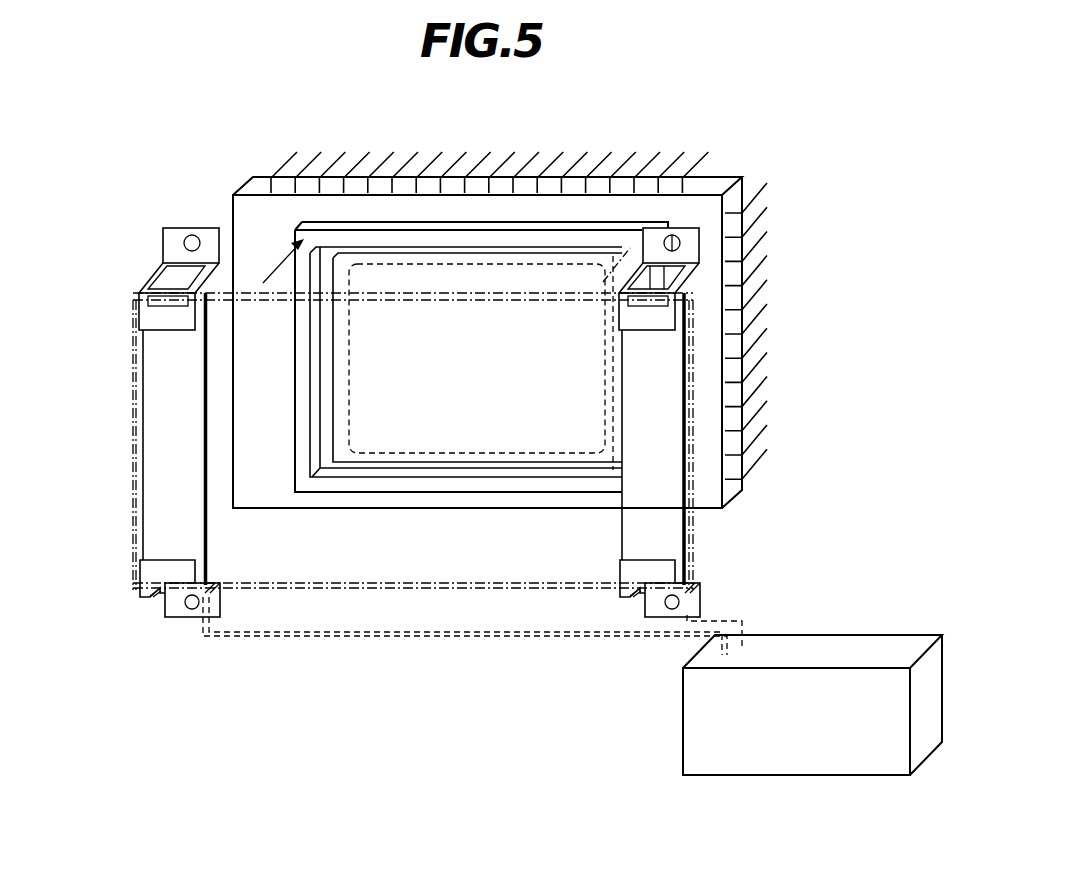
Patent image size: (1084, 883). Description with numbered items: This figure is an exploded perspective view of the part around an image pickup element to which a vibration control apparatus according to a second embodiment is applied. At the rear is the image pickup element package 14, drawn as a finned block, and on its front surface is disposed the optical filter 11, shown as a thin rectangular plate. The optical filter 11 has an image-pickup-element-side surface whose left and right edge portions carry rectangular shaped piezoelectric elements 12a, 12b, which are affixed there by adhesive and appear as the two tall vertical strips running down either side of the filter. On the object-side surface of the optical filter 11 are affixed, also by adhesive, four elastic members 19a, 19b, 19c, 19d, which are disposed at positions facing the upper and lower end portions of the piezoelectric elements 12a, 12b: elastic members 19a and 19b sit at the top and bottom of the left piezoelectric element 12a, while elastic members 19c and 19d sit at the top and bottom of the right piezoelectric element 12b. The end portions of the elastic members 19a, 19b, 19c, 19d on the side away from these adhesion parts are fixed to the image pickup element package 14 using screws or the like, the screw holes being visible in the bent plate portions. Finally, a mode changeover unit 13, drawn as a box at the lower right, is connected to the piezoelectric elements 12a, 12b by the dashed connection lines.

The optical filter 11 is at (395, 590).
The piezoelectric element 12a is at (208, 535).
The piezoelectric element 12b is at (688, 533).
The mode changeover unit 13 is at (813, 647).
The image pickup element package 14 is at (727, 159).
The elastic member 19a is at (150, 318).
The elastic member 19b is at (150, 573).
The elastic member 19c is at (628, 318).
The elastic member 19d is at (628, 572).